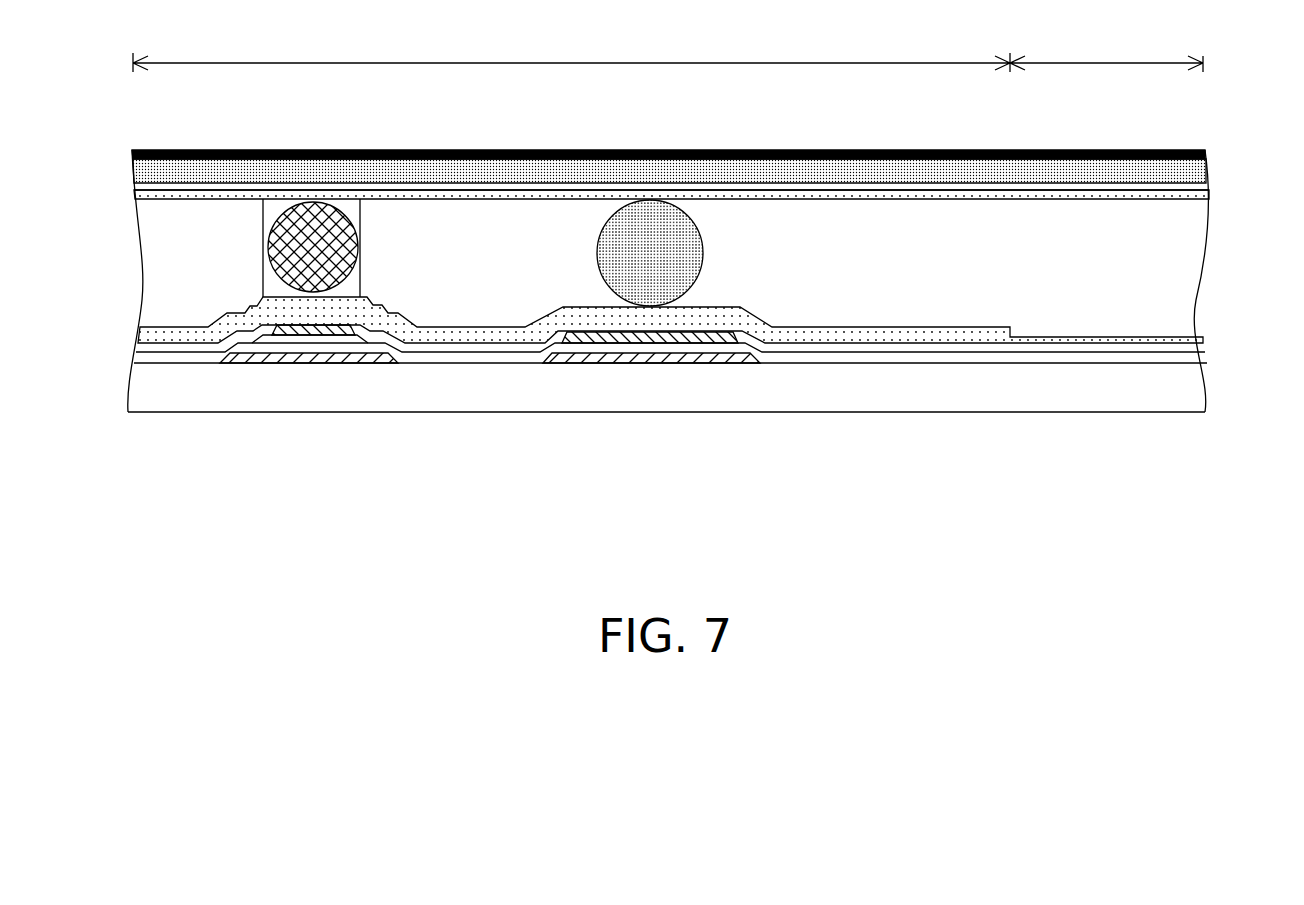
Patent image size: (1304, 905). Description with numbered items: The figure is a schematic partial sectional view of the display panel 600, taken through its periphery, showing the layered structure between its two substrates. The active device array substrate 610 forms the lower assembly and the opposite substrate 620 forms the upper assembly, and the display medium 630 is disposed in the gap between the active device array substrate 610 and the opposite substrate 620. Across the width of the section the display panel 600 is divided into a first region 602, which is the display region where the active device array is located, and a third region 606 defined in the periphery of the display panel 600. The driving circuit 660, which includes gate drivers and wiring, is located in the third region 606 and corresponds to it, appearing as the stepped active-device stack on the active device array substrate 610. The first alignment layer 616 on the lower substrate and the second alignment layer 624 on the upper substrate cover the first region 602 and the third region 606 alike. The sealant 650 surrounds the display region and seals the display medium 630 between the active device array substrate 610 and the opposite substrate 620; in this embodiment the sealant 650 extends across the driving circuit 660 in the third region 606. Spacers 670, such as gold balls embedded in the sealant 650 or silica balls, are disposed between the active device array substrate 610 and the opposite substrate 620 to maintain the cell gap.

The display panel 600 is at (1237, 526).
The first region 602 is at (1106, 42).
The third region 606 is at (571, 42).
The active device array substrate 610 is at (633, 144).
The first alignment layer 616 is at (482, 333).
The opposite substrate 620 is at (632, 290).
The second alignment layer 624 is at (888, 195).
The display medium 630 is at (1140, 272).
The sealant 650 is at (273, 288).
The driving circuit 660 is at (218, 372).
The spacers 670 is at (290, 247).